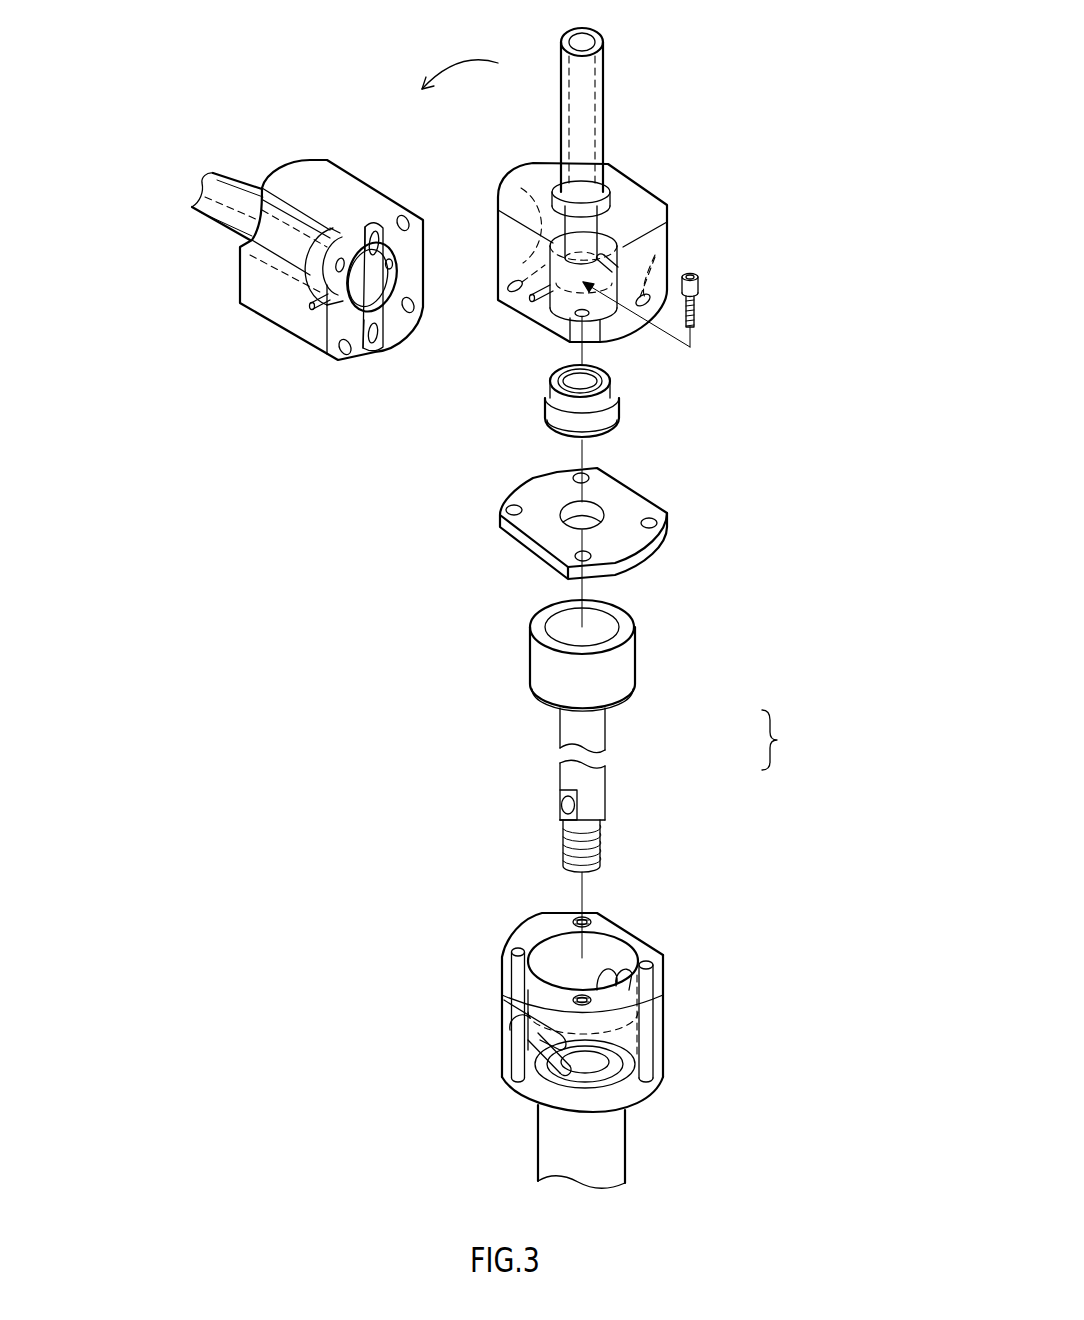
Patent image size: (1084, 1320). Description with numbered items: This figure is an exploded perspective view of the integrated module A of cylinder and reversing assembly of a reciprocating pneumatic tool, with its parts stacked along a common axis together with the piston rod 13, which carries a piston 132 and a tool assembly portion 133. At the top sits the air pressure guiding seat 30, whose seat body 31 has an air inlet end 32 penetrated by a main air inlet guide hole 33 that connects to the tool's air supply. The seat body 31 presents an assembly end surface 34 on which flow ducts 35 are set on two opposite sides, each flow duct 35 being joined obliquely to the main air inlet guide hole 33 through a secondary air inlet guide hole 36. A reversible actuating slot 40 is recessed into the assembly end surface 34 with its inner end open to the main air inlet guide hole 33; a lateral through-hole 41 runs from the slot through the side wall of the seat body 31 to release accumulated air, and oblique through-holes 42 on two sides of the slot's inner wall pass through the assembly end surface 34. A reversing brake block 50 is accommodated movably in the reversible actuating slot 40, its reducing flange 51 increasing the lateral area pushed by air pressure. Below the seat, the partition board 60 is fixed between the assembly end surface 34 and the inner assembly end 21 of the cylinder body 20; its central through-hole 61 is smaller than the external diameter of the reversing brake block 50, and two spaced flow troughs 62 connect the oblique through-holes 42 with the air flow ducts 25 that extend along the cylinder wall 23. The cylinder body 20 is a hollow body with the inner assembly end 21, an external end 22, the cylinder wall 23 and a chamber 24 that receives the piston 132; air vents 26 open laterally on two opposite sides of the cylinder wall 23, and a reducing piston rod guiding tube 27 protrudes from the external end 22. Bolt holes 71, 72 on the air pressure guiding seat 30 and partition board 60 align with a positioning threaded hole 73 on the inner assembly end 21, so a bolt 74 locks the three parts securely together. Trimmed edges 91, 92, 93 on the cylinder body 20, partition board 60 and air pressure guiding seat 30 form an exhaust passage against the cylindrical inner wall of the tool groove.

The piston rod 13 is at (667, 779).
The piston 132 is at (635, 662).
The tool assembly portion 133 is at (607, 838).
The cylinder body 20 is at (495, 997).
The inner assembly end 21 is at (645, 952).
The external end 22 is at (642, 1097).
The cylinder wall 23 is at (663, 1000).
The chamber 24 is at (560, 967).
The air flow ducts 25 is at (515, 953).
The air vents 26 is at (517, 1027).
The reducing piston rod guiding tube 27 is at (540, 1147).
The air pressure guiding seat 30 is at (677, 86).
The seat body 31 is at (347, 180).
The air inlet end 32 is at (233, 177).
The main air inlet guide hole 33 is at (578, 37).
The assembly end surface 34 is at (332, 325).
The flow ducts 35 is at (377, 233).
The secondary air inlet guide hole 36 is at (313, 218).
The reversible actuating slot 40 is at (475, 228).
The lateral through-hole 41 is at (308, 302).
The oblique through-holes 42 is at (403, 218).
The reversing brake block 50 is at (654, 419).
The reducing flange 51 is at (605, 435).
The partition board 60 is at (593, 514).
The through-hole 61 is at (563, 505).
The flow troughs 62 is at (507, 508).
The bolt hole 71 is at (587, 317).
The bolt holes 72 is at (577, 472).
The positioning threaded hole 73 is at (590, 922).
The bolt 74 is at (703, 280).
The trimmed edge 91 is at (540, 988).
The trimmed edge 92 is at (537, 548).
The trimmed edge 93 is at (513, 255).
The integrated module of cylinder and reversing assembly A is at (333, 725).